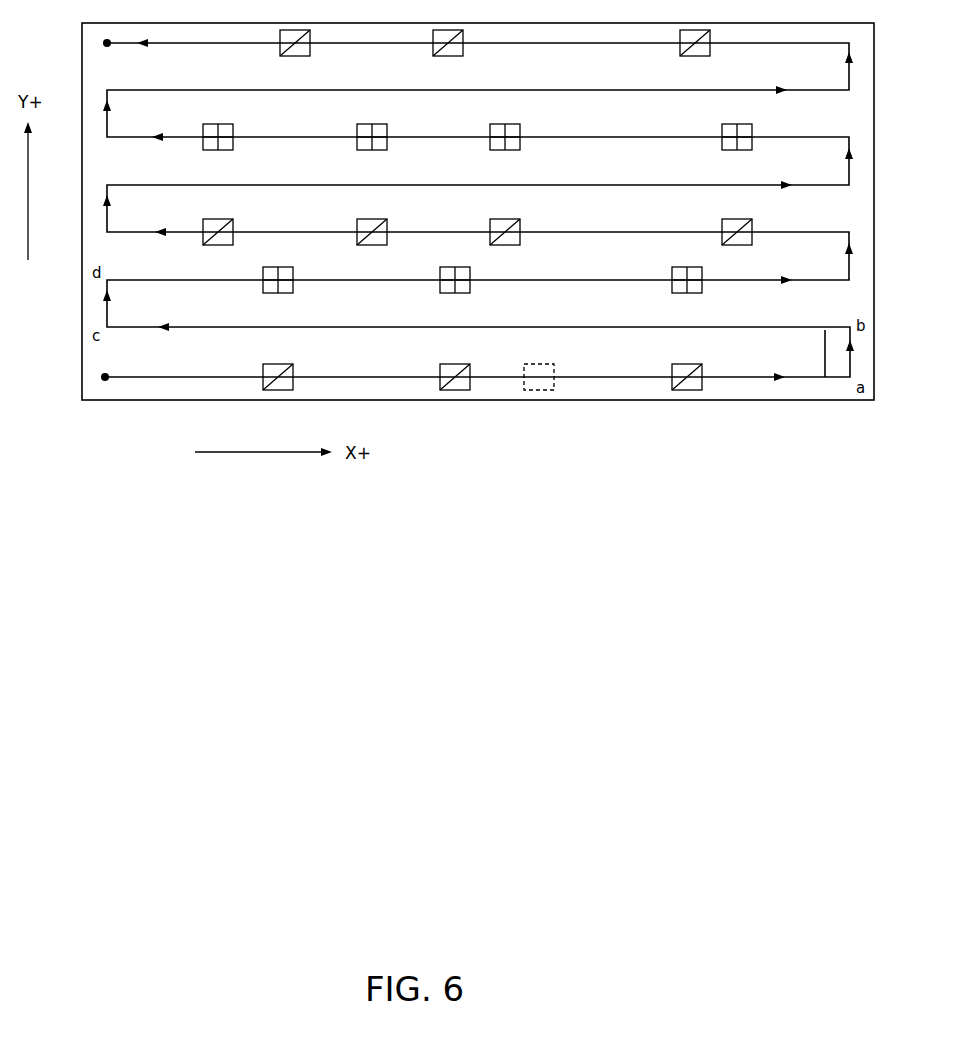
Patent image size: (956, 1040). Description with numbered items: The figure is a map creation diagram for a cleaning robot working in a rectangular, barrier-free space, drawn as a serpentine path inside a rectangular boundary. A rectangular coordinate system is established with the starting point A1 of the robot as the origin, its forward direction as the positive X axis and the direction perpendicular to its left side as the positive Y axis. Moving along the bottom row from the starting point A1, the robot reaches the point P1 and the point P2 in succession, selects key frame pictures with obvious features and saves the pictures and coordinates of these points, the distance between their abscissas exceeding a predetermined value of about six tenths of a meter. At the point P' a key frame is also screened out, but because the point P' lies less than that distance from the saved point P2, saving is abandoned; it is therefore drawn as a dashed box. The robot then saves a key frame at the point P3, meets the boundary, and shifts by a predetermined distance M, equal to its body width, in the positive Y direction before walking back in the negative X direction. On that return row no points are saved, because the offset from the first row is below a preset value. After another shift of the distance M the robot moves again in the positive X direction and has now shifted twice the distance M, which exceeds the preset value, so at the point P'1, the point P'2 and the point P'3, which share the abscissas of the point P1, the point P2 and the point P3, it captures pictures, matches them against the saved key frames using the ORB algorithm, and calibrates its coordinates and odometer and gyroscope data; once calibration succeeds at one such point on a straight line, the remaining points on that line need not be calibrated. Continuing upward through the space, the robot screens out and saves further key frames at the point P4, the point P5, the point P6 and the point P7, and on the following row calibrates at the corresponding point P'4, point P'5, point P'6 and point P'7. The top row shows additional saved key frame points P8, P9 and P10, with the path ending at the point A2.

The starting point A1 is at (118, 365).
The end point of drive path A2 is at (112, 58).
The predetermined distance M is at (815, 353).
The point P1 is at (278, 363).
The point P2 is at (455, 363).
The point P' is at (539, 363).
The point P3 is at (687, 363).
The point P4 is at (737, 219).
The point P5 is at (505, 219).
The point P6 is at (372, 219).
The point P7 is at (218, 219).
The turn point 8 P8 is at (695, 57).
The turn point 9 P9 is at (448, 57).
The turn point 10 P10 is at (299, 57).
The point P'1 is at (278, 268).
The point P'2 is at (456, 268).
The point P'3 is at (688, 268).
The point P'4 is at (738, 124).
The point P'5 is at (506, 124).
The point P'6 is at (373, 124).
The point P'7 is at (218, 124).